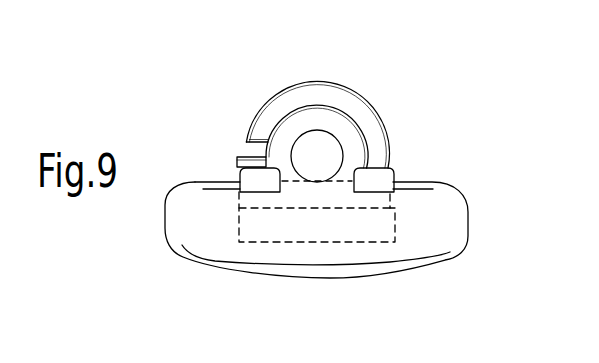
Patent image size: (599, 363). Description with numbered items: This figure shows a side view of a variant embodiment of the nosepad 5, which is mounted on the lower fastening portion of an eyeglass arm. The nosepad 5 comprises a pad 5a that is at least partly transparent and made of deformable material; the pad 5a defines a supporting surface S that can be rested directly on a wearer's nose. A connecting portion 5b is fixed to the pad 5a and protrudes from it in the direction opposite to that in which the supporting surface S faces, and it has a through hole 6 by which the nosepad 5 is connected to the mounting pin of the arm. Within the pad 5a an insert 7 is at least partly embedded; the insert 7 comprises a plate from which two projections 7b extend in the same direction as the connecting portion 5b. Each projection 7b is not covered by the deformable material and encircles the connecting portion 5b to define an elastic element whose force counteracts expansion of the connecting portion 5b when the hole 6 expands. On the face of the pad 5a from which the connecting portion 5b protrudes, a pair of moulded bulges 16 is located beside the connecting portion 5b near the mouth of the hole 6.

The nosepad 5 is at (437, 174).
The pad 5a is at (450, 222).
The connecting portion 5b is at (292, 128).
The through hole 6 is at (317, 145).
The insert 7 is at (310, 232).
The projection 7b is at (237, 166).
The bulges 16 is at (248, 182).
The supporting surface S is at (256, 268).